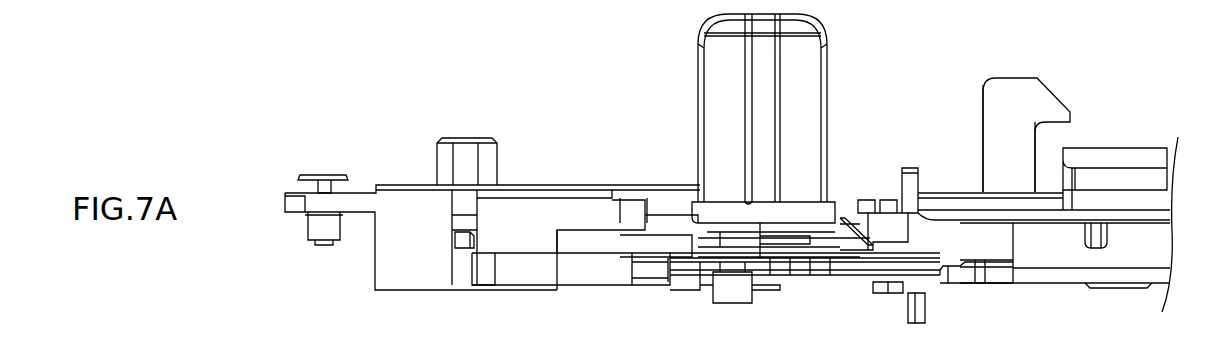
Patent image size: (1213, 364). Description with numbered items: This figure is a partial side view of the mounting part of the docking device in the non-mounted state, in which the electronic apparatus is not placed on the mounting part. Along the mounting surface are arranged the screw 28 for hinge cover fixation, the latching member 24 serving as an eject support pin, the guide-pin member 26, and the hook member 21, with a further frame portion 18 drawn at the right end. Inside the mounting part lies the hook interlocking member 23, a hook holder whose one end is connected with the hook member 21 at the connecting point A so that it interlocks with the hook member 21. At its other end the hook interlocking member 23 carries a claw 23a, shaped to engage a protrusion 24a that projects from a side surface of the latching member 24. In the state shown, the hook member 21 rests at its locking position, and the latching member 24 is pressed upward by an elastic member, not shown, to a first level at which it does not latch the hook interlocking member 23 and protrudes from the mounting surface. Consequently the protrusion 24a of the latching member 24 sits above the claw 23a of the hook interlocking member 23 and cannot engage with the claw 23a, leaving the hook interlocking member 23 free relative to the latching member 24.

The screw for hinge cover fixation 28 is at (325, 175).
The latching member 24 is at (463, 152).
The protrusion 24a is at (462, 239).
The hook interlocking member 23 is at (583, 275).
The claw 23a is at (485, 277).
The guide-pin member 26 is at (802, 70).
The hook member 21 is at (1012, 93).
The frame 18 is at (1133, 156).
The connecting point A is at (933, 288).